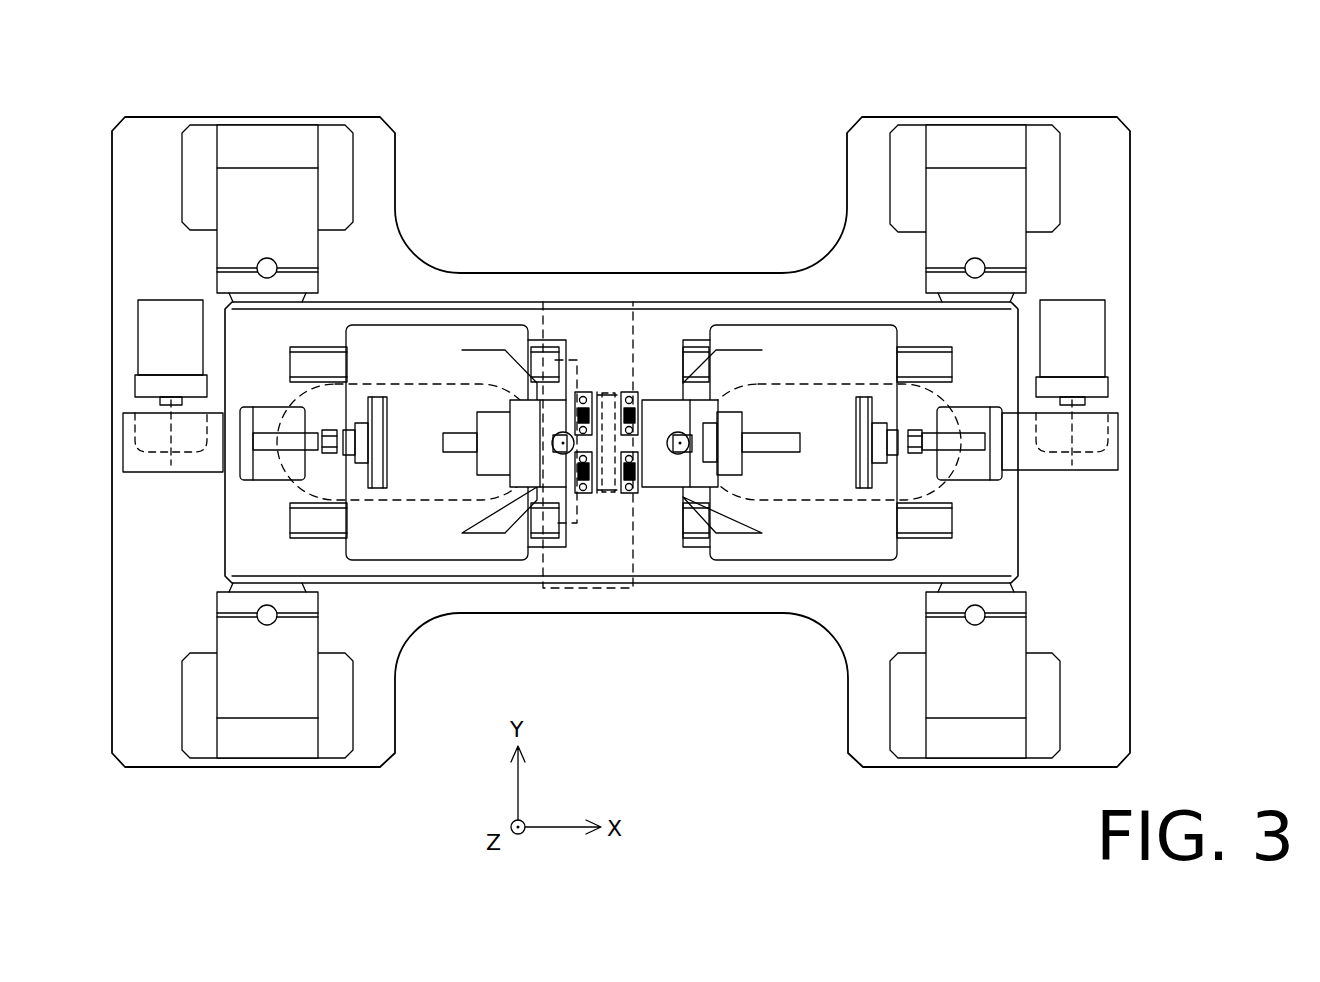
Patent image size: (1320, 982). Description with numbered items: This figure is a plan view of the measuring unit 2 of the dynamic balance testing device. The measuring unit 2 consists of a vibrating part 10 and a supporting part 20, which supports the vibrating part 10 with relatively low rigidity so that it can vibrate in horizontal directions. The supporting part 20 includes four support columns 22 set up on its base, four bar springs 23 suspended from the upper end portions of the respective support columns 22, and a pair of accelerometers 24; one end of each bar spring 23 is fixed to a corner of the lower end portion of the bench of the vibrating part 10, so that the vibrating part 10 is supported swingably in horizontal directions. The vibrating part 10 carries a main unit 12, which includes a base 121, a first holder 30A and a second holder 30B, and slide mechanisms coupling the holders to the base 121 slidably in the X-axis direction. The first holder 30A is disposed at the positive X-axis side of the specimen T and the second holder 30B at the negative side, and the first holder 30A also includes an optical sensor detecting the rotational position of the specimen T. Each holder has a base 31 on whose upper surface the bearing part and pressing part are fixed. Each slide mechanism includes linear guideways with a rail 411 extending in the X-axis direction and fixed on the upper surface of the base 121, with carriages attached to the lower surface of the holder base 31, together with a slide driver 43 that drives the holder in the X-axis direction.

The measuring unit 2 is at (676, 463).
The vibrating part 10 is at (496, 584).
The main unit 12 is at (621, 514).
The base 121 is at (680, 586).
The supporting part 20 is at (955, 729).
The support column 22 is at (878, 768).
The bar spring 23 is at (977, 626).
The accelerometer 24 is at (1108, 346).
The first holder 30A is at (868, 454).
The second holder 30B is at (437, 324).
The base 31 is at (797, 557).
The rail 411 is at (955, 512).
The slide driver 43 is at (1118, 422).
The specimen T is at (612, 301).